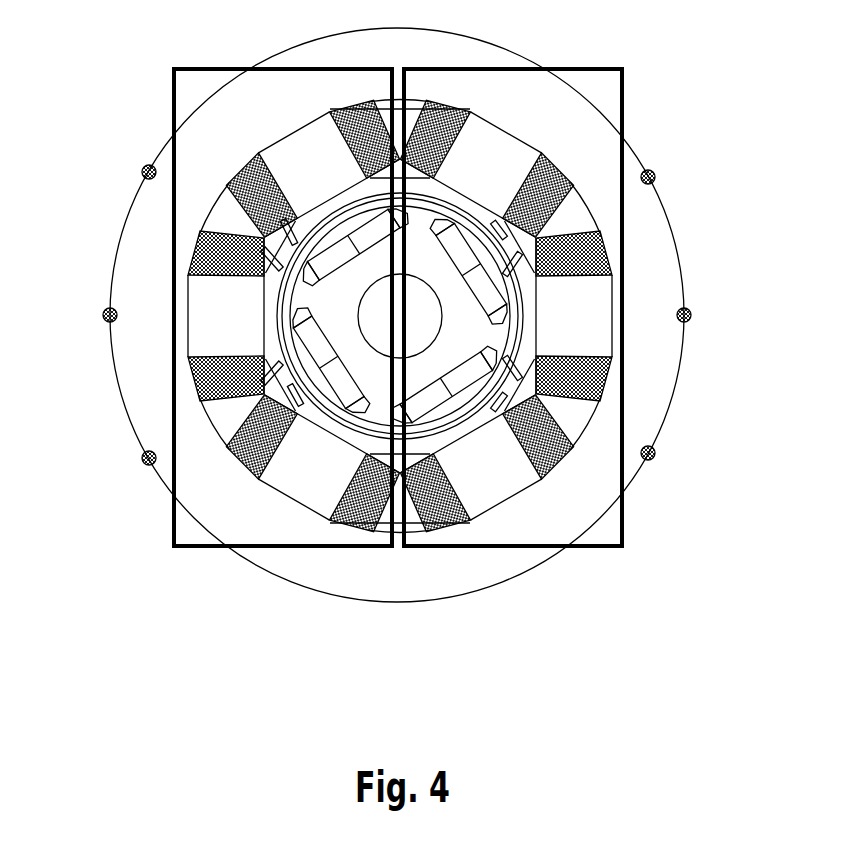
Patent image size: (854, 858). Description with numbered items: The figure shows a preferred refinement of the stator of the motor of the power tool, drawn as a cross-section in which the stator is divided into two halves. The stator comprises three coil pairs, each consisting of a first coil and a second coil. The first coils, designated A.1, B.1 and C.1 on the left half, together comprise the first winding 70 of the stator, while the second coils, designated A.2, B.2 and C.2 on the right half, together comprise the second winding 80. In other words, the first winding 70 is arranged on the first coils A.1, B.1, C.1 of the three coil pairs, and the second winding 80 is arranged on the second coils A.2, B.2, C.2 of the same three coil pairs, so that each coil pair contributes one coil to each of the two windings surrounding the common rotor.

The first winding 70 is at (255, 513).
The second winding 80 is at (520, 513).
The first stator coil A.1 is at (174, 458).
The first stator coil B.1 is at (197, 362).
The first stator coil C.1 is at (174, 172).
The second stator coil A.2 is at (622, 177).
The second stator coil B.2 is at (605, 258).
The second stator coil C.2 is at (622, 453).